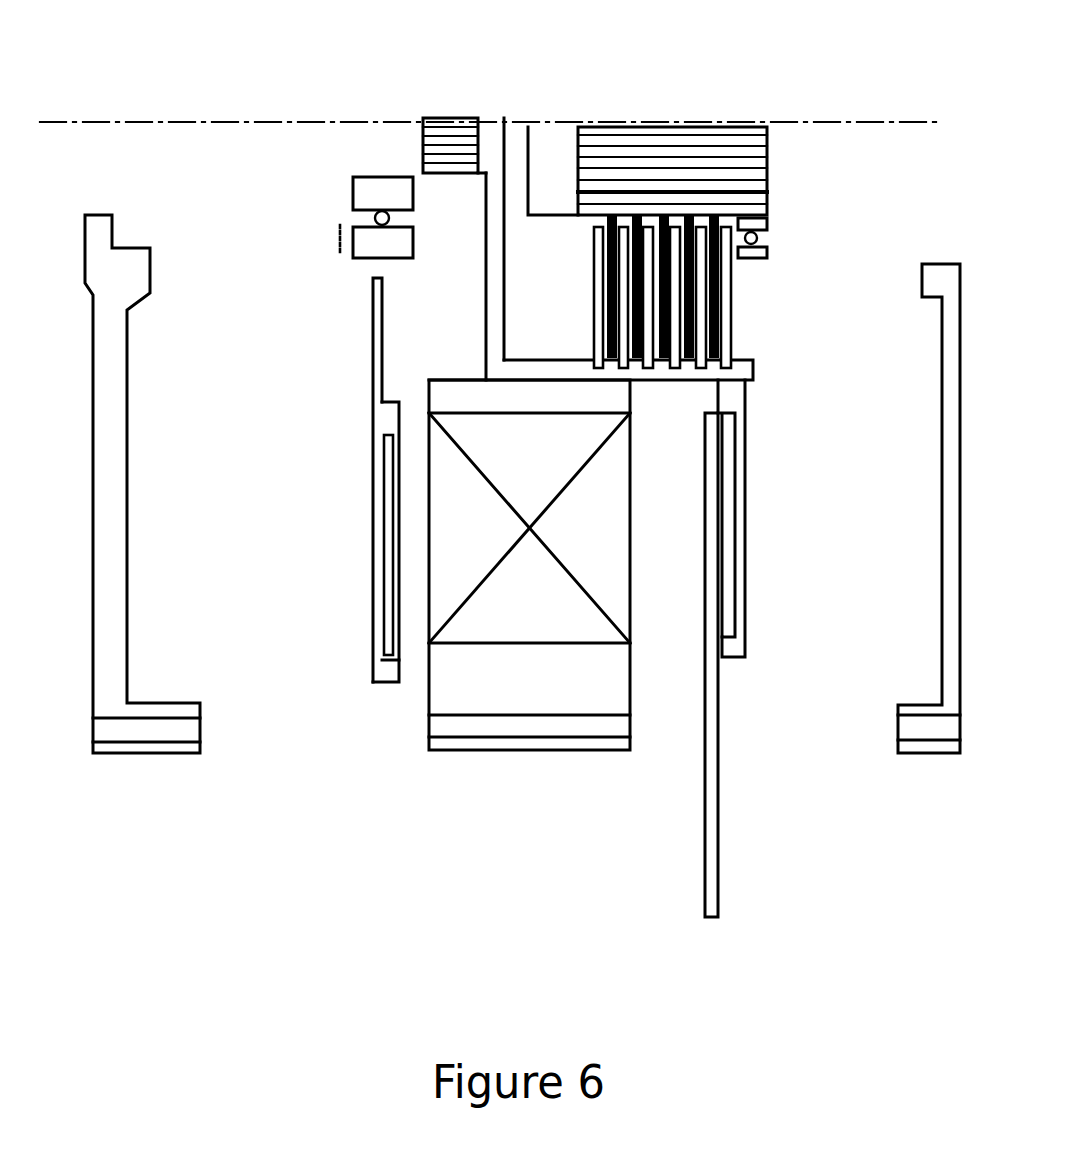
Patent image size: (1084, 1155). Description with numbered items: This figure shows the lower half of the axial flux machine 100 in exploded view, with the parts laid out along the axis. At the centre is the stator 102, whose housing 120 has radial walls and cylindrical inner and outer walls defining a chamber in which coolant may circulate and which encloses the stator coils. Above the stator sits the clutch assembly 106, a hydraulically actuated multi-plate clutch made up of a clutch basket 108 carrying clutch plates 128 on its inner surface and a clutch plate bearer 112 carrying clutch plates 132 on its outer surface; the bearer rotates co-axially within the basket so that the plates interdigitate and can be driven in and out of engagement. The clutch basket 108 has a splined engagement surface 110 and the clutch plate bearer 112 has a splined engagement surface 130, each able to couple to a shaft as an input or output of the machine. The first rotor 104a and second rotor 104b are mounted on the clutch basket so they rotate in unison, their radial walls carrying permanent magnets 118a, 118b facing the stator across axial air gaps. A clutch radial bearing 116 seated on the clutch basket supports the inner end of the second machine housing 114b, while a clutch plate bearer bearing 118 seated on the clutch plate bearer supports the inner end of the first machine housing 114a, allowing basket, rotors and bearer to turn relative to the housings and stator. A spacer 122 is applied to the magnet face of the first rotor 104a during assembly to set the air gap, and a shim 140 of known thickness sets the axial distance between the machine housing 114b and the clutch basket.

The axial flux machine 100 is at (820, 988).
The stator 102 is at (555, 752).
The first rotor 104a is at (732, 648).
The second rotor 104b is at (393, 423).
The clutch assembly 106 is at (470, 252).
The clutch basket 108 is at (495, 288).
The engagement surface 110 is at (422, 142).
The clutch plate bearer 112 is at (553, 142).
The first machine housing 114a is at (930, 594).
The second machine housing 114b is at (168, 750).
The clutch radial bearing 116 is at (368, 197).
The clutch plate bearer bearing 118 is at (763, 253).
The permanent magnets 118a is at (733, 587).
The permanent magnets 118b is at (393, 648).
The housing 120 is at (508, 677).
The spacer 122 is at (712, 820).
The clutch plates 128 is at (725, 348).
The engagement surface 130 is at (747, 197).
The clutch plates 132 is at (718, 280).
The shim 140 is at (340, 255).